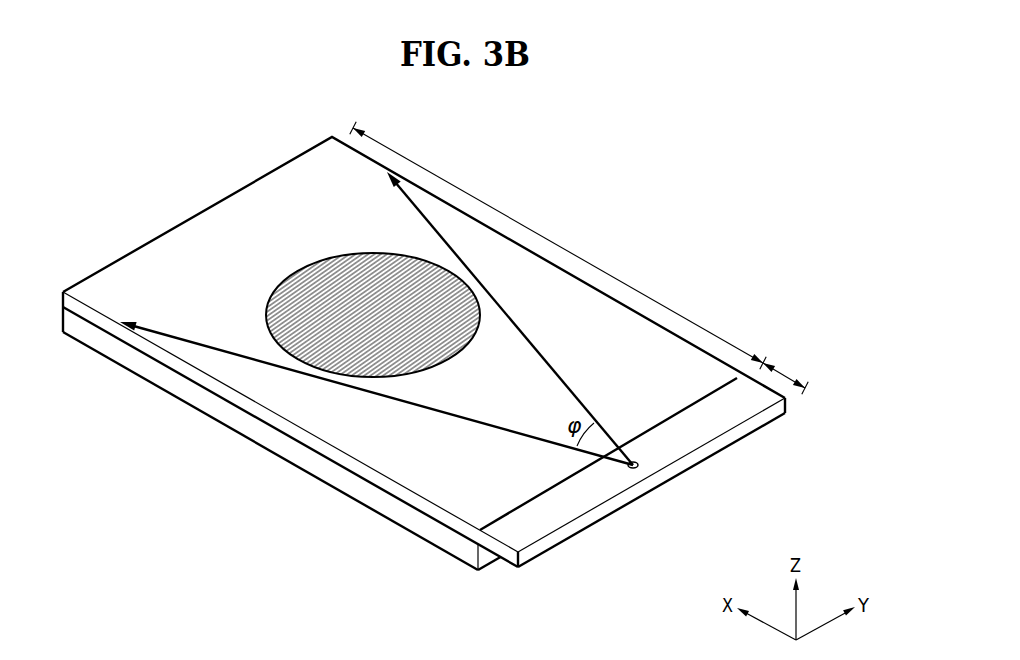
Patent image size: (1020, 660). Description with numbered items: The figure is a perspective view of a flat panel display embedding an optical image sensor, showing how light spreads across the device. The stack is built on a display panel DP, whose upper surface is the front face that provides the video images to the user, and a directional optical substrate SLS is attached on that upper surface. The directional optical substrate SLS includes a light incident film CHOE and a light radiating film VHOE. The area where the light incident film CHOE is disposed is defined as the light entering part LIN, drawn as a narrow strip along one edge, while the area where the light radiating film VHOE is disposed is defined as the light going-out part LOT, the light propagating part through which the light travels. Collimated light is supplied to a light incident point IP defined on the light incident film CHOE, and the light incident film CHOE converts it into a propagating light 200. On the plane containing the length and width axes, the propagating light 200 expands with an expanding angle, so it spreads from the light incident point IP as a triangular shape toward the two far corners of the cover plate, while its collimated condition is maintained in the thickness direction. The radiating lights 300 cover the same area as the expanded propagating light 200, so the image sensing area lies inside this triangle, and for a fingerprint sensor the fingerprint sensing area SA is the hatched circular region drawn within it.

The fingerprint sensing area SA is at (310, 271).
The display panel DP is at (172, 385).
The directional optical substrate SLS is at (247, 403).
The light radiating film VHOE is at (337, 432).
The light incident film CHOE is at (545, 525).
The light incident point IP is at (637, 470).
The light going-out part LOT is at (558, 246).
The light entering part LIN is at (793, 373).
The propagating light 200 is at (557, 373).
The radiating lights 300 is at (376, 334).